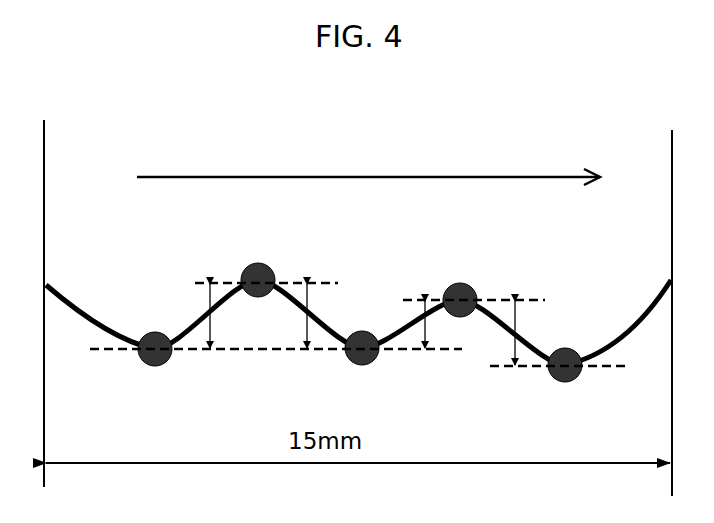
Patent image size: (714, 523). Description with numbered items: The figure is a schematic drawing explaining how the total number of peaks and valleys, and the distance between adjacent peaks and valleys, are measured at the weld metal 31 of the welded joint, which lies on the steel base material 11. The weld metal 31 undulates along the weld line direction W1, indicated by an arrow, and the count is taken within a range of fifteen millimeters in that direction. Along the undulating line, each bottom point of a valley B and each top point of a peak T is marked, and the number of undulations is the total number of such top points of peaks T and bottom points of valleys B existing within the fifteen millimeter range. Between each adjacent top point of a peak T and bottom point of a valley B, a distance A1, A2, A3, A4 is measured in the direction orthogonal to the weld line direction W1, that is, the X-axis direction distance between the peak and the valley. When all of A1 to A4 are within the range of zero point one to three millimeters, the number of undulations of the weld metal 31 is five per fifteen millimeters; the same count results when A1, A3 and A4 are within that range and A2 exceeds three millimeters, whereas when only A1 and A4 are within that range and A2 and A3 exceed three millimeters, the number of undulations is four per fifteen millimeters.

The steel base material 11 is at (116, 443).
The weld metal 31 is at (120, 222).
The bottom point of a valley B is at (258, 263).
The top point of a peak T is at (160, 366).
The distance between adjacent top point of a peak and bottom point of a valley A1 is at (190, 316).
The distance between adjacent top point of a peak and bottom point of a valley A2 is at (320, 316).
The distance between adjacent top point of a peak and bottom point of a valley A3 is at (408, 324).
The distance between adjacent top point of a peak and bottom point of a valley A4 is at (527, 333).
The weld line direction W1 is at (368, 163).